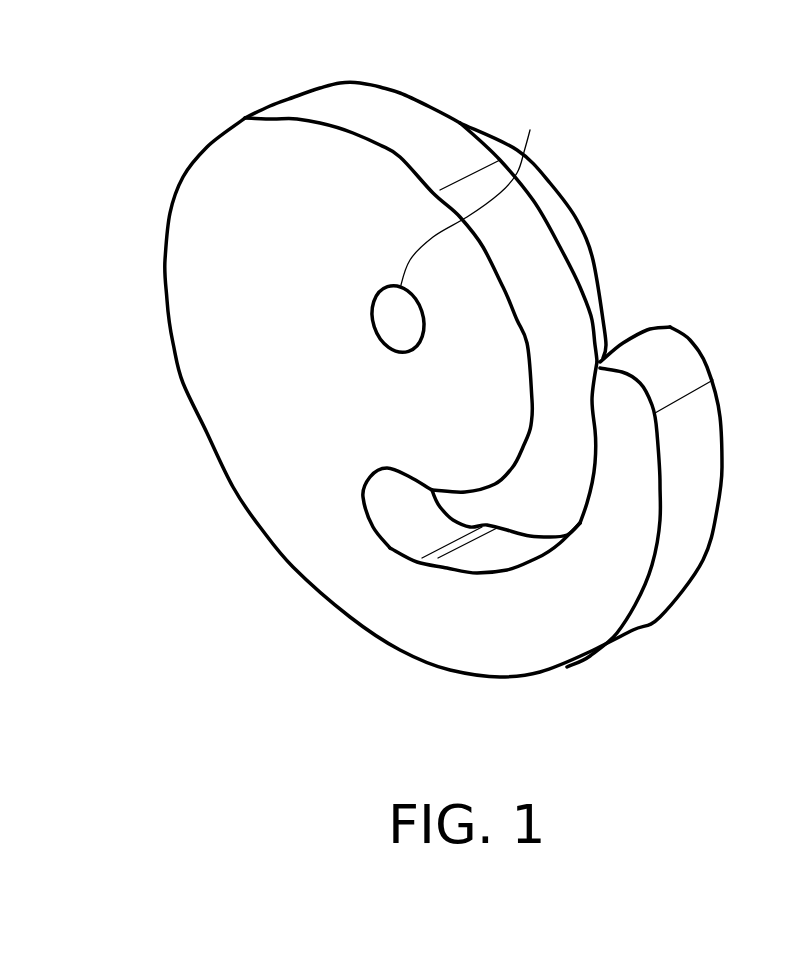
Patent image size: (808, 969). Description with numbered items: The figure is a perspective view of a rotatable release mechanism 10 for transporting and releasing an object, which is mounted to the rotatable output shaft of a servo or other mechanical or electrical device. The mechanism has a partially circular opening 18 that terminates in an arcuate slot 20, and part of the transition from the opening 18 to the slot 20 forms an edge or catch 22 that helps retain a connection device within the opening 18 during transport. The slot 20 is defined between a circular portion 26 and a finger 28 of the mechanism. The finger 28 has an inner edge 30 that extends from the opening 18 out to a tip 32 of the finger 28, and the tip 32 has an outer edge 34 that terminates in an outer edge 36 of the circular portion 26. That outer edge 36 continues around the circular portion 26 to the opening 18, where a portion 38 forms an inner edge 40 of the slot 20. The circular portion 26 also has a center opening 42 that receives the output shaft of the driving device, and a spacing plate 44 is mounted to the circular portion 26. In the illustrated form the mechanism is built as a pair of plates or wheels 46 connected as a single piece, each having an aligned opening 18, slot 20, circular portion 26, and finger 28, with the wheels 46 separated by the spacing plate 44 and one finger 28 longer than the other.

The rotatable release mechanism 10 is at (633, 100).
The partially circular opening 18 is at (408, 515).
The arcuate slot 20 is at (533, 495).
The catch 22 is at (413, 560).
The circular portion 26 is at (383, 220).
The finger 28 is at (587, 600).
The inner edge of finger 30 is at (580, 500).
The tip of finger 32 is at (668, 340).
The outer edge of finger tip 34 is at (694, 450).
The outer edge of circular portion 36 is at (310, 104).
The portion forming inner edge of slot 38 is at (503, 425).
The inner edge of slot 40 is at (450, 472).
The opening for output shaft 42 is at (475, 196).
The spacing plate 44 is at (578, 216).
The plates/wheels 46 is at (172, 210).